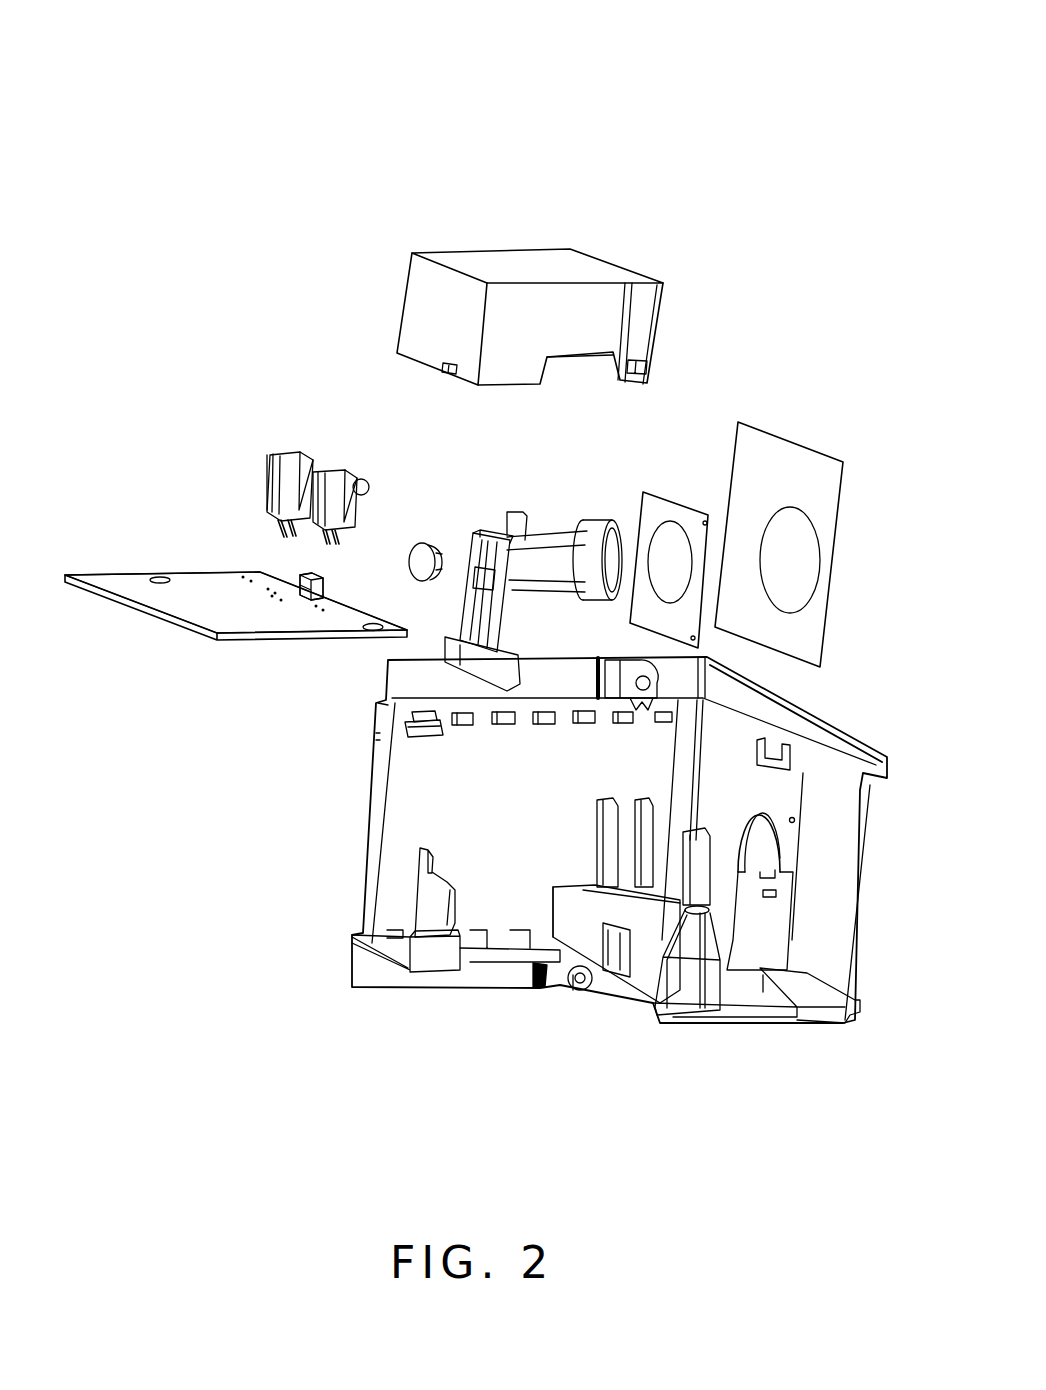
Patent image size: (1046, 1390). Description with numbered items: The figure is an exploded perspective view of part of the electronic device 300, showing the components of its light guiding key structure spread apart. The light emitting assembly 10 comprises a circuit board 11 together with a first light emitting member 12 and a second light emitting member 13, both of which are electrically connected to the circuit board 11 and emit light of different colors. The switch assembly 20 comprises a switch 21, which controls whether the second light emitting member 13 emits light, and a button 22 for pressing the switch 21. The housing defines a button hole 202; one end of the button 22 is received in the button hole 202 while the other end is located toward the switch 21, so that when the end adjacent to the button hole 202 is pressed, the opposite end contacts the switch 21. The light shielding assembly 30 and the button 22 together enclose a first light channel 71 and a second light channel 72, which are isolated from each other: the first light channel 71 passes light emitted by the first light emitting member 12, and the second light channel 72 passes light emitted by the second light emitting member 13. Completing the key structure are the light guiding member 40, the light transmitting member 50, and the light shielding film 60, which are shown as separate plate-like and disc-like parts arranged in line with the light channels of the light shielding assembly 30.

The electronic device 300 is at (413, 66).
The light shielding assembly 30 is at (527, 269).
The light emitting assembly 10 is at (264, 375).
The circuit board 11 is at (223, 583).
The first light emitting member 12 is at (297, 493).
The second light emitting member 13 is at (343, 488).
The light guiding member 40 is at (423, 558).
The switch assembly 20 is at (337, 698).
The switch 21 is at (300, 598).
The button 22 is at (540, 568).
The first light channel 71 is at (476, 548).
The second light channel 72 is at (660, 880).
The light transmitting member 50 is at (653, 507).
The light shielding film 60 is at (780, 465).
The button hole 202 is at (775, 840).